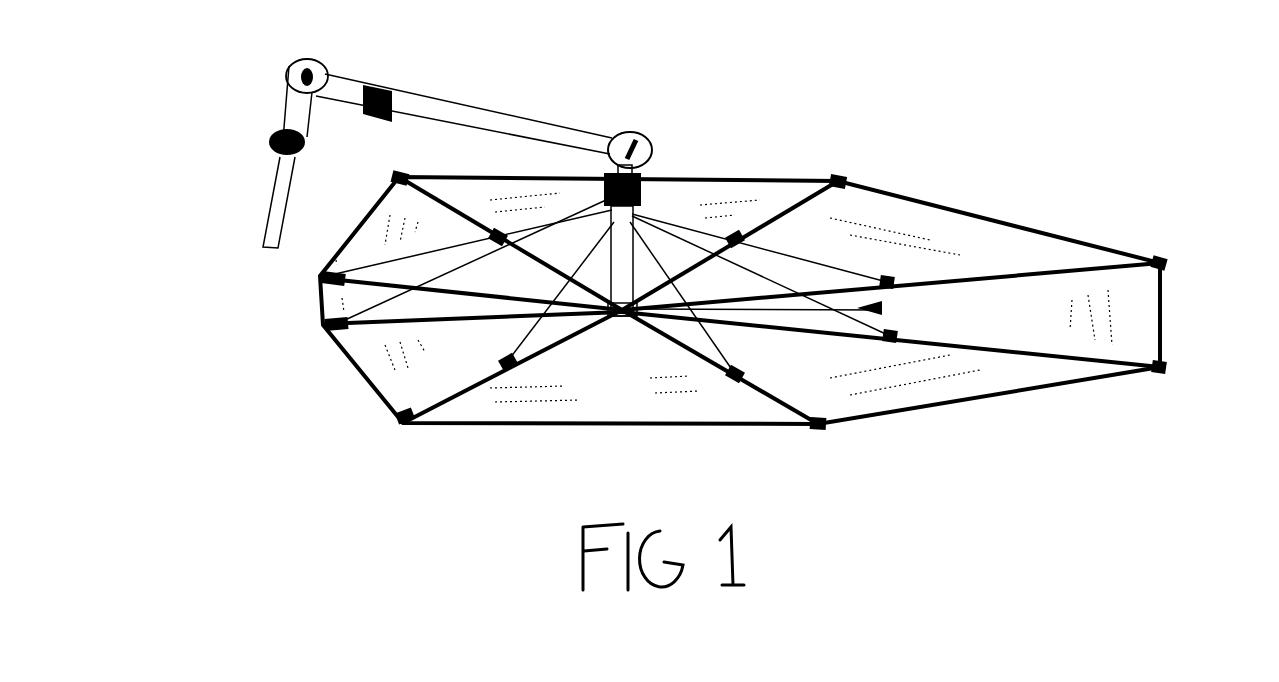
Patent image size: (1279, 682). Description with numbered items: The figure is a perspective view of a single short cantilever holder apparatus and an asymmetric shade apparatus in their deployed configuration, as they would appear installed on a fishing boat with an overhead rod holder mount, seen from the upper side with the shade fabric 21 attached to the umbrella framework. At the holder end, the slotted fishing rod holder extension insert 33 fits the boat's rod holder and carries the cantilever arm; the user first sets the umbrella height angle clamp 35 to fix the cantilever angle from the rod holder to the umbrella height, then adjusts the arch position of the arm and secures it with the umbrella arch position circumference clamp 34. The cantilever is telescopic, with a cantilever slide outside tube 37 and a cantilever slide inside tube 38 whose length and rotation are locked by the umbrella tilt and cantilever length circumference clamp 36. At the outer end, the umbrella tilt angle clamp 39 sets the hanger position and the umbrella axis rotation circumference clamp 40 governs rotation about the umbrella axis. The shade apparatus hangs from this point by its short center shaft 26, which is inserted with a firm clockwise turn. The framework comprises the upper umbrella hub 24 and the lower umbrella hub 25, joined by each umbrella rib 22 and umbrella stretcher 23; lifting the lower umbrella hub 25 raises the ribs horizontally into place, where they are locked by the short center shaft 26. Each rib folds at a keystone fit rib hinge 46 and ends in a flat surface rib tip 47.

The shade fabric 21 is at (925, 190).
The umbrella rib 22 is at (1073, 256).
The umbrella stretcher 23 is at (878, 310).
The upper umbrella hub 24 is at (650, 158).
The lower umbrella hub 25 is at (608, 345).
The short center shaft 26 is at (603, 313).
The slotted fishing rod holder extension insert 33 is at (248, 194).
The umbrella arch position circumference clamp 34 is at (248, 131).
The umbrella height angle clamp 35 is at (262, 73).
The umbrella tilt and cantilever length circumference clamp 36 is at (405, 70).
The cantilever slide outside tube 37 is at (512, 93).
The cantilever slide inside tube 38 is at (351, 62).
The umbrella tilt angle clamp 39 is at (626, 116).
The umbrella axis rotation circumference clamp 40 is at (590, 190).
The keystone fit rib hinge 46 is at (476, 346).
The flat surface rib tip 47 is at (367, 428).